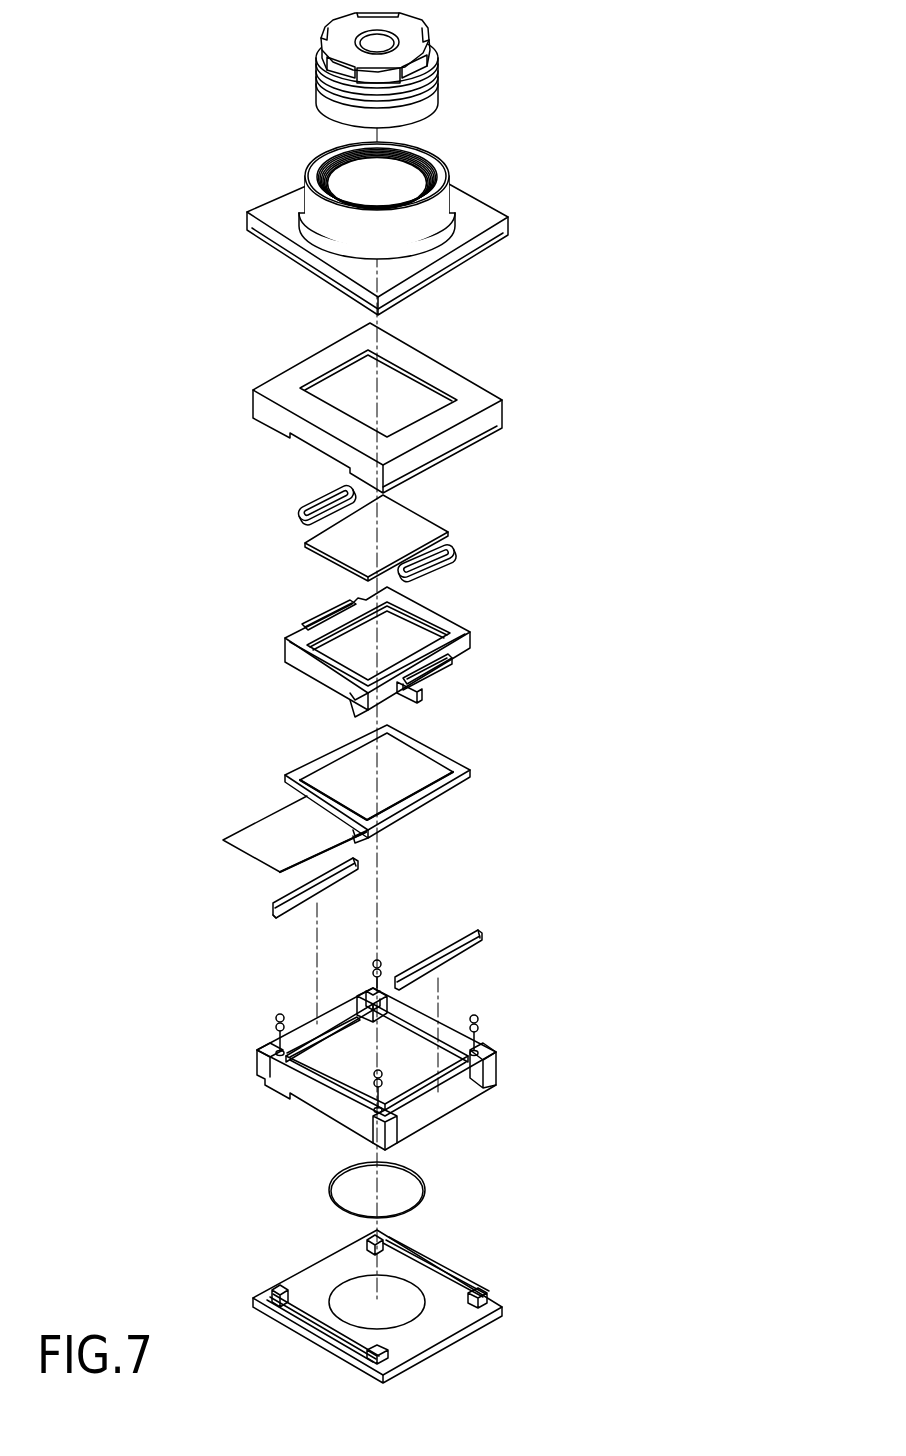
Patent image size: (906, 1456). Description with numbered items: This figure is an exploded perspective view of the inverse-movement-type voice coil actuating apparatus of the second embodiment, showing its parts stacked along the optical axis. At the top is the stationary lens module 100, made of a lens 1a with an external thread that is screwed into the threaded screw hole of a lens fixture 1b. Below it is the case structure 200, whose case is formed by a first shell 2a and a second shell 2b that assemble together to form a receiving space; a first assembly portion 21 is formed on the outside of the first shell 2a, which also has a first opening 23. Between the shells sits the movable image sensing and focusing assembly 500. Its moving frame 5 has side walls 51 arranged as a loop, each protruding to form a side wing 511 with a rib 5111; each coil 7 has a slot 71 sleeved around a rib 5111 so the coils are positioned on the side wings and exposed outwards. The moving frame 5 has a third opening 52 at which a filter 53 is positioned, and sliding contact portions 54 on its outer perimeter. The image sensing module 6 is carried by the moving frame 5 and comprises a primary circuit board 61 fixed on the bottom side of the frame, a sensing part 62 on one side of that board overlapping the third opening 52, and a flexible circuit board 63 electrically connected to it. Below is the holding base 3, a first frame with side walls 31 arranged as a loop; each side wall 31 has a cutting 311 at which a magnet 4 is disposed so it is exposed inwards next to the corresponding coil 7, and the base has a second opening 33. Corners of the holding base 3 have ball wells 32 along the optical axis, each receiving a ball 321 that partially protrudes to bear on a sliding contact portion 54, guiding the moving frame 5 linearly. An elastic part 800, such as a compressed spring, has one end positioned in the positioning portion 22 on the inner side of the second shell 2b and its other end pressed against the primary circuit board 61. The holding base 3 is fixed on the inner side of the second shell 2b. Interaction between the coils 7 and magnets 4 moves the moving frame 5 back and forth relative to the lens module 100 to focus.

The lens module 100 is at (192, 35).
The lens 1a is at (298, 52).
The lens fixture 1b is at (293, 167).
The case structure 200 is at (245, 370).
The first shell 2a is at (296, 350).
The first assembly portion 21 is at (477, 393).
The first opening 23 is at (415, 393).
The image sensing and focusing assembly 500 is at (190, 530).
The coil 7 is at (297, 512).
The slot 71 is at (443, 548).
The filter 53 is at (413, 522).
The moving frame 5 is at (284, 623).
The side wall 51 is at (430, 617).
The third opening 52 is at (350, 643).
The sliding contact portion 54 is at (470, 642).
The side wing 511 is at (437, 688).
The rib 5111 is at (455, 677).
The image sensing module 6 is at (288, 757).
The primary circuit board 61 is at (453, 797).
The sensing part 62 is at (398, 792).
The flexible circuit board 63 is at (245, 833).
The magnet 4 is at (477, 942).
The holding base 3 is at (246, 1058).
The side wall 31 is at (450, 1030).
The cutting 311 is at (308, 1035).
The second opening 33 is at (347, 1048).
The ball well 32 is at (477, 1050).
The ball 321 is at (483, 1020).
The elastic part 800 is at (330, 1183).
The second shell 2b is at (295, 1258).
The positioning portion 22 is at (403, 1292).